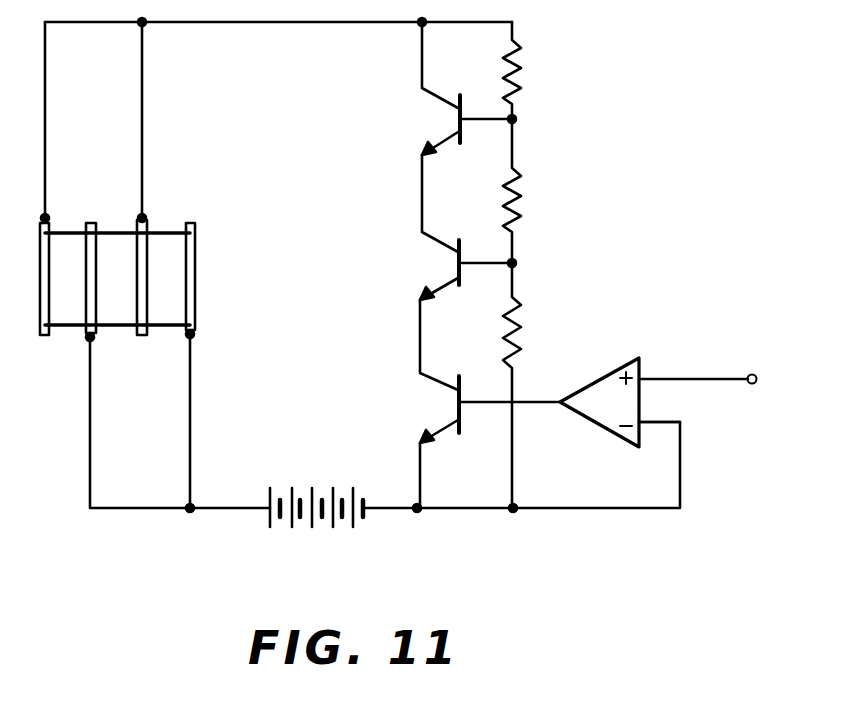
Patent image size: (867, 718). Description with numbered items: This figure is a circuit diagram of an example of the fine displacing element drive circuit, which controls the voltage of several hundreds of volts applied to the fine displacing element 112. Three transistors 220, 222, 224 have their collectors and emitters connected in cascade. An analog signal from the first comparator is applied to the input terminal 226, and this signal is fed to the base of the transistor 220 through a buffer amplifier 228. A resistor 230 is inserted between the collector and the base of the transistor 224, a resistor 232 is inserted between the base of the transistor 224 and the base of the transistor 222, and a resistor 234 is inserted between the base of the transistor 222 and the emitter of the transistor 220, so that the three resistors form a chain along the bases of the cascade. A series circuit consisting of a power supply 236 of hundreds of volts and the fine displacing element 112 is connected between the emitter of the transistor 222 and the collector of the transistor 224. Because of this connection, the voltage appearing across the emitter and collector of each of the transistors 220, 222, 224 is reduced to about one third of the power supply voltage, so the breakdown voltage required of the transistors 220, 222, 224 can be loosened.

The fine displacing element 112 is at (210, 210).
The transistor 220 is at (448, 406).
The transistor 222 is at (453, 260).
The transistor 224 is at (445, 115).
The input terminal 226 is at (757, 372).
The buffer amplifier 228 is at (606, 428).
The resistor 230 is at (521, 72).
The resistor 232 is at (524, 197).
The resistor 234 is at (523, 330).
The power supply 236 is at (360, 523).